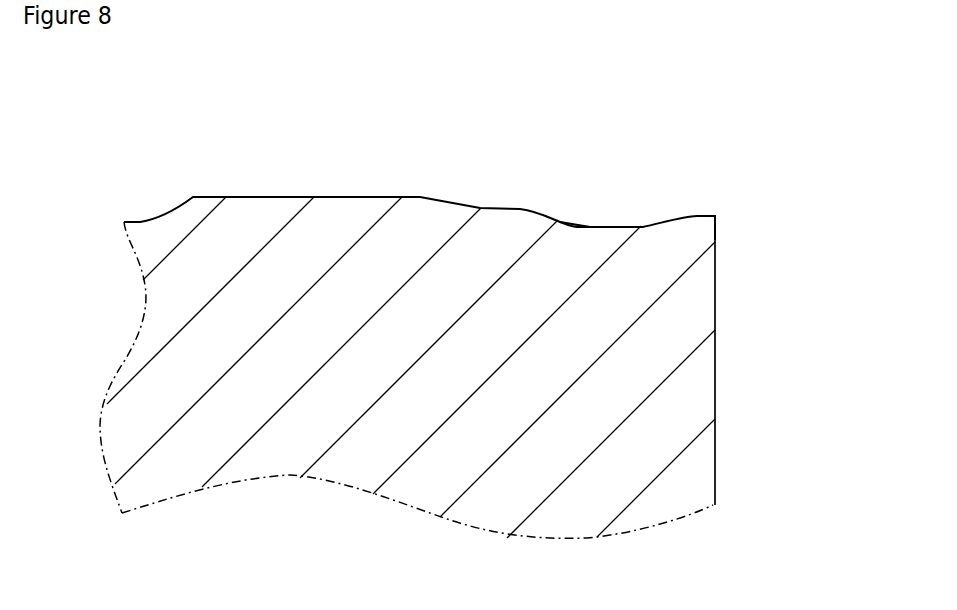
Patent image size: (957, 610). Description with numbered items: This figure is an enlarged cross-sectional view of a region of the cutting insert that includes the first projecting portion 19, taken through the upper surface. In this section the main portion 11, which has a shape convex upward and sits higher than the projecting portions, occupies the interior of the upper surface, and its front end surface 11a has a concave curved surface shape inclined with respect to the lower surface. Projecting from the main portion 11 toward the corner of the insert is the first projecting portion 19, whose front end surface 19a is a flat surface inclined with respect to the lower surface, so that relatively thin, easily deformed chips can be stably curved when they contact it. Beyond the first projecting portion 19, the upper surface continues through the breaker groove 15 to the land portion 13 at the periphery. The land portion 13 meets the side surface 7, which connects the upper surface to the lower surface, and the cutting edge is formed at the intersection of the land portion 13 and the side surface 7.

The side surface 7 is at (715, 388).
The main portion 11 is at (295, 196).
The front end surface of the main portion 11a is at (450, 197).
The first projecting portion 19 is at (508, 207).
The front end surface of the first projecting portion 19a is at (562, 217).
The breaker groove 15 is at (645, 227).
The land portion 13 is at (705, 212).